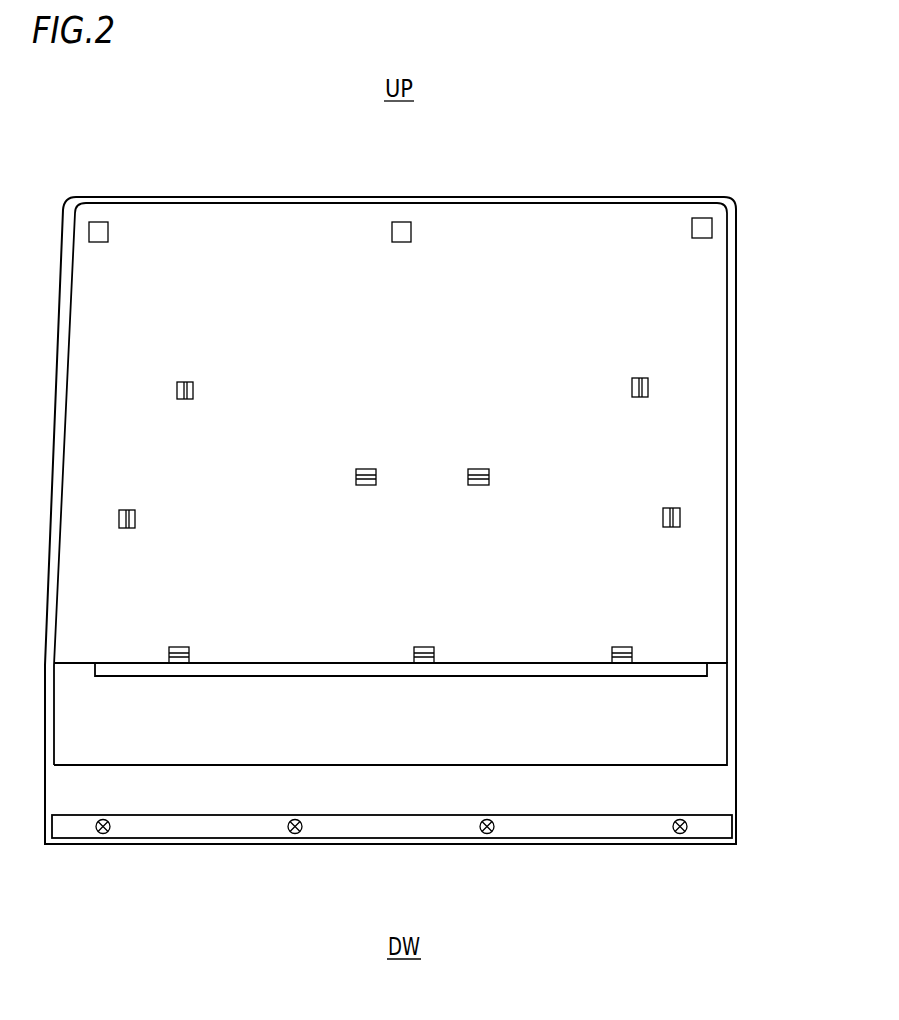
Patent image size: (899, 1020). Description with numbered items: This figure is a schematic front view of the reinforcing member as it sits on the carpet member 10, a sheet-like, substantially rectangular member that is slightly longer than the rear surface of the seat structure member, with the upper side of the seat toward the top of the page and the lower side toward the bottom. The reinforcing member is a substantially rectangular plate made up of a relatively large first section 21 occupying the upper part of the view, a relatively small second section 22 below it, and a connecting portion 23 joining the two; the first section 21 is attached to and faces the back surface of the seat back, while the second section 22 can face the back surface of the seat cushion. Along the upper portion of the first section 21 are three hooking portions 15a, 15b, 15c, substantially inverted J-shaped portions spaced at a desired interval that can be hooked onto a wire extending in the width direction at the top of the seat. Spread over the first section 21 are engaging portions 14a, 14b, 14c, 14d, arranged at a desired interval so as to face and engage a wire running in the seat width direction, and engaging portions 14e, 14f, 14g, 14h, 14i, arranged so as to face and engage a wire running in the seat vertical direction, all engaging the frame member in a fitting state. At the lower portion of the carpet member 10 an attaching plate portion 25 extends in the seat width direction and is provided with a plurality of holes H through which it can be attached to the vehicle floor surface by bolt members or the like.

The carpet member 10 is at (730, 326).
The first section 21 is at (690, 281).
The second section 22 is at (692, 720).
The connecting portion 23 is at (683, 660).
The attaching plate portion 25 is at (705, 825).
The holes H is at (103, 834).
The hooking portion 15a is at (108, 232).
The hooking portion 15b is at (411, 232).
The hooking portion 15c is at (712, 228).
The engaging portion 14a is at (193, 390).
The engaging portion 14b is at (632, 386).
The engaging portion 14c is at (135, 519).
The engaging portion 14d is at (663, 516).
The engaging portion 14e is at (366, 468).
The engaging portion 14f is at (478, 468).
The engaging portion 14g is at (179, 646).
The engaging portion 14h is at (424, 646).
The engaging portion 14i is at (622, 646).